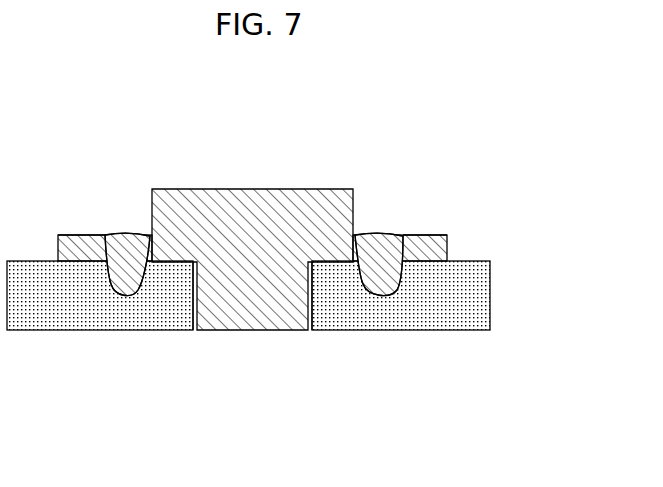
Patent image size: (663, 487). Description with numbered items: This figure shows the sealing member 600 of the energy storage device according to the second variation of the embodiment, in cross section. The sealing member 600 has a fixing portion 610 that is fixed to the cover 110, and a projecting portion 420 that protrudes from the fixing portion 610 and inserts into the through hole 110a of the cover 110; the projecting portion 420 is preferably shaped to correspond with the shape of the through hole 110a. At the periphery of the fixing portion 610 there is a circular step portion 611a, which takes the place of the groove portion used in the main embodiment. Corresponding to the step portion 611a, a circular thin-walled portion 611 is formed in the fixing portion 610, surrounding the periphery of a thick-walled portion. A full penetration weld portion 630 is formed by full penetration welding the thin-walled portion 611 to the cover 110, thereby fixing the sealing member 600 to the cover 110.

The sealing member 600 is at (475, 152).
The fixing portion 610 is at (305, 185).
The thin-walled portion 611 is at (85, 237).
The step portion 611a is at (132, 205).
The full penetration weld portion 630 is at (125, 287).
The projecting portion 420 is at (227, 318).
The cover 110 is at (463, 320).
The through hole 110a is at (310, 327).